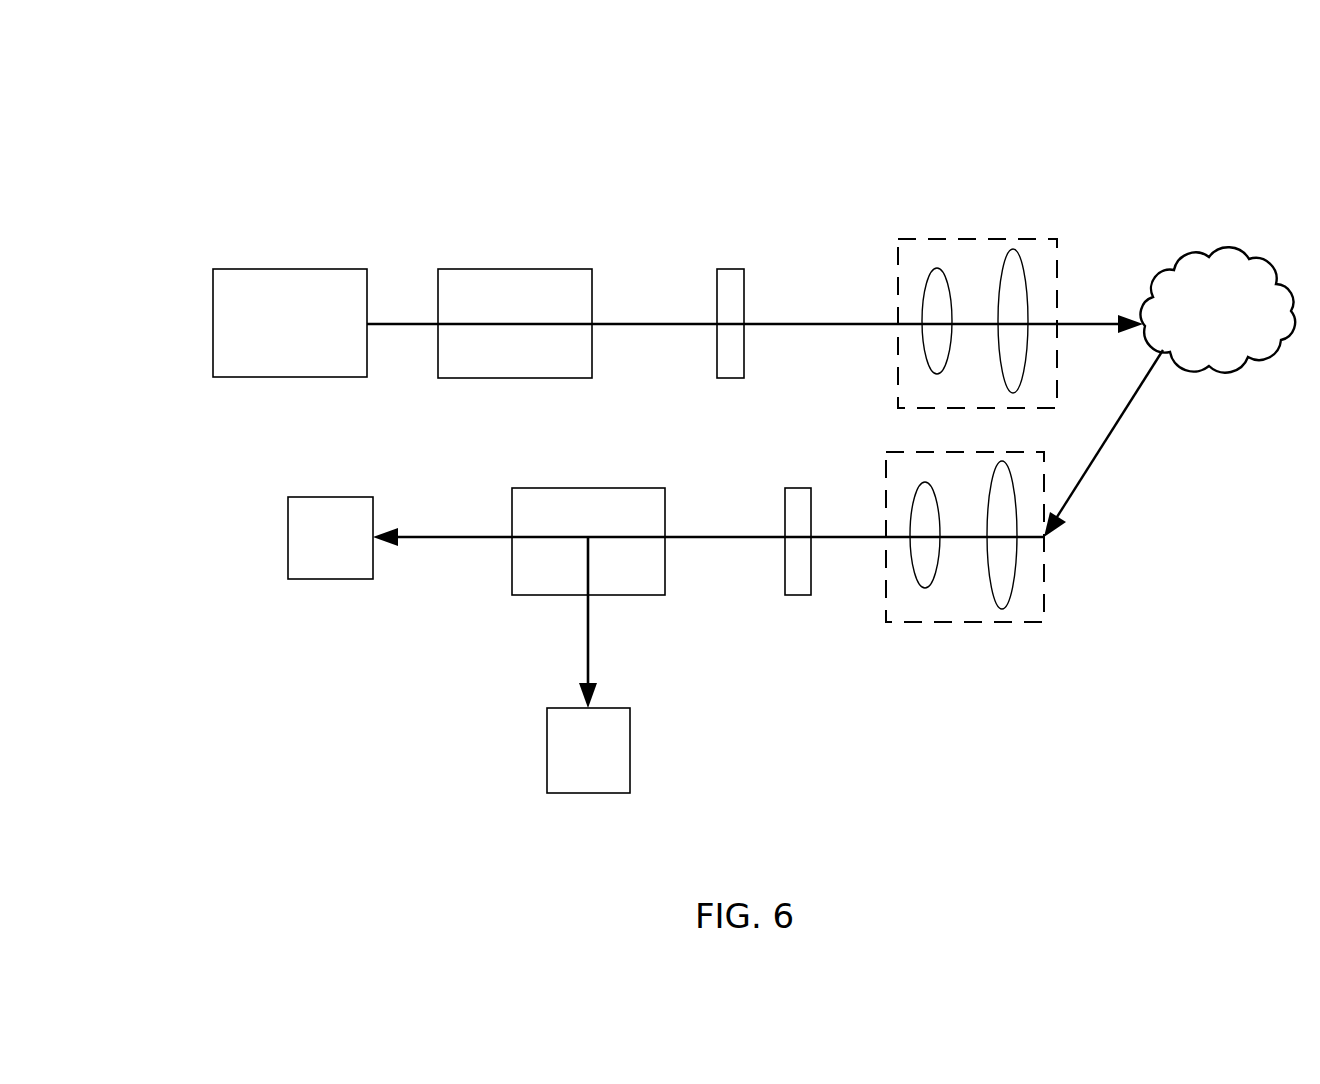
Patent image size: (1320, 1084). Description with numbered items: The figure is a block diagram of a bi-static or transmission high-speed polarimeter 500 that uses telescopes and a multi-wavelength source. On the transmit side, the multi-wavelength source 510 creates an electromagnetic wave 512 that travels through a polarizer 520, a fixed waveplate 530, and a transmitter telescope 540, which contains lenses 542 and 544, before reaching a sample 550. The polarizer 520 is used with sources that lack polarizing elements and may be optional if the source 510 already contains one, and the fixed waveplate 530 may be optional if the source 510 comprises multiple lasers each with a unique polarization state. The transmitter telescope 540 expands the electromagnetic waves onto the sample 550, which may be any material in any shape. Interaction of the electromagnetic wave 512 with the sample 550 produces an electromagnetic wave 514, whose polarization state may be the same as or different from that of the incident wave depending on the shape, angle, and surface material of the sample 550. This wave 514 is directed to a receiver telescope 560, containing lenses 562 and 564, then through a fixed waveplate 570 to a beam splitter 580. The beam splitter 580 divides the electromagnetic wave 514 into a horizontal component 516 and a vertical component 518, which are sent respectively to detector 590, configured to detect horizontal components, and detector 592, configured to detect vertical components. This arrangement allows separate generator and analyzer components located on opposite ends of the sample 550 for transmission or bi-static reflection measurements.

The high-speed polarimeter 500 is at (1008, 160).
The multi-wavelength source 510 is at (213, 330).
The electromagnetic wave 512 is at (387, 326).
The electromagnetic wave 514 is at (1115, 427).
The horizontal component 516 is at (477, 538).
The vertical component 518 is at (590, 640).
The polarizer 520 is at (470, 269).
The fixed waveplate 530 is at (725, 269).
The transmitter telescope 540 is at (898, 252).
The lens 542 is at (925, 353).
The lens 544 is at (1025, 275).
The sample 550 is at (1185, 278).
The receiver telescope 560 is at (1047, 580).
The lens 562 is at (910, 500).
The lens 564 is at (1012, 588).
The fixed waveplate 570 is at (805, 595).
The beam splitter 580 is at (537, 595).
The detector 590 is at (288, 540).
The detector 592 is at (547, 753).